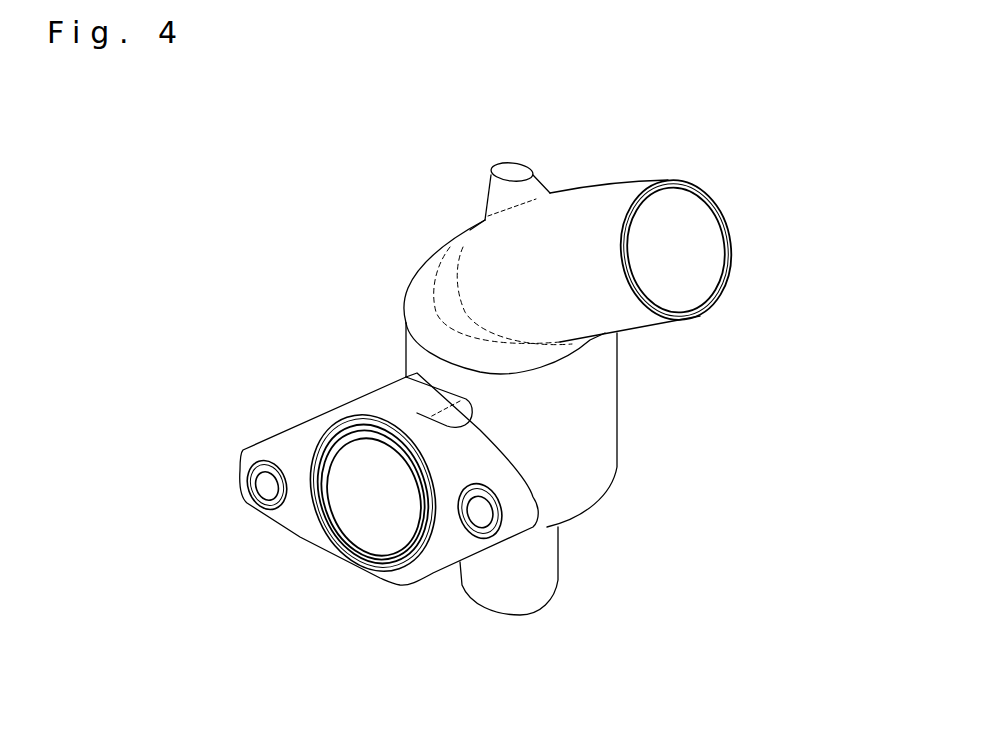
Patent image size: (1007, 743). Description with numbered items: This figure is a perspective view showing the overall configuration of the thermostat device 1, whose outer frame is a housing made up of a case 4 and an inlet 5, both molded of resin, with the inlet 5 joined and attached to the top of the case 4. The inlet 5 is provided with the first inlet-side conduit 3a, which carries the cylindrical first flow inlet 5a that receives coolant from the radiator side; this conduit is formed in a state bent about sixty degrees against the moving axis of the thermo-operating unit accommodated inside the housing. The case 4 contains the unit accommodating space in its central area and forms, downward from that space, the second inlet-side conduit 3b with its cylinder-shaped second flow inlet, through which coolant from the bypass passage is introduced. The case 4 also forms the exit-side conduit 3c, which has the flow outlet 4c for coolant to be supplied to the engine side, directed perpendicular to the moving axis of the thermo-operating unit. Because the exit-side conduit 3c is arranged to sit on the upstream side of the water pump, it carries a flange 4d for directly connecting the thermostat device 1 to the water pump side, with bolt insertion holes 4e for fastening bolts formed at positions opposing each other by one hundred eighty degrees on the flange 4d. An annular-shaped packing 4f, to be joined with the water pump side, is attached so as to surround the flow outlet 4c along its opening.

The thermostat device 1 is at (748, 192).
The first inlet-side conduit 3a is at (733, 237).
The second inlet-side conduit 3b is at (530, 614).
The exit-side conduit 3c is at (310, 440).
The case 4 is at (415, 502).
The flow outlet 4c is at (360, 522).
The flange 4d is at (287, 518).
The bolt insertion holes 4e is at (262, 486).
The annular-shaped packing 4f is at (373, 580).
The inlet 5 is at (628, 293).
The first flow inlet 5a is at (693, 273).